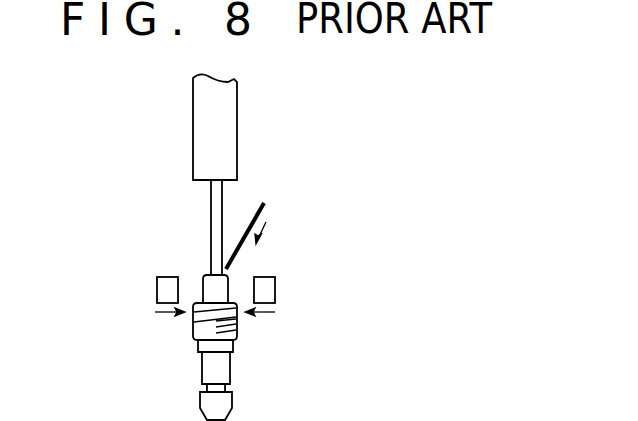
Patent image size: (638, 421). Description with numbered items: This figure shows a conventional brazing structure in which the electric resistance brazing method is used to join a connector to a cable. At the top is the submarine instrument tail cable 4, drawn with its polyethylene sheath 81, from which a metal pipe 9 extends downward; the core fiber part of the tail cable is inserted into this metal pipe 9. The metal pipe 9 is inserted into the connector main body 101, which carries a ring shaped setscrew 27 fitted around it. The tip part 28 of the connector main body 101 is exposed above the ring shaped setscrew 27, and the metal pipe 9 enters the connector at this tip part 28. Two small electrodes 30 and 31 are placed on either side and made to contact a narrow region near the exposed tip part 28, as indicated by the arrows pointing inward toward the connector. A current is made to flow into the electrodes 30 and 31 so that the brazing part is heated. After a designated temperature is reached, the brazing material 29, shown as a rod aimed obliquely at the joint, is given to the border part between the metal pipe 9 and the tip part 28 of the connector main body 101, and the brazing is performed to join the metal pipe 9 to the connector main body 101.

The submarine instrument tail cable 4 is at (238, 107).
The polyethylene sheath 81 is at (205, 106).
The metal pipe 9 is at (210, 213).
The tip part 28 is at (208, 285).
The brazing material 29 is at (266, 203).
The small electrode 30 is at (157, 290).
The small electrode 31 is at (268, 290).
The ring shaped setscrew 27 is at (193, 324).
The connector main body 101 is at (226, 367).